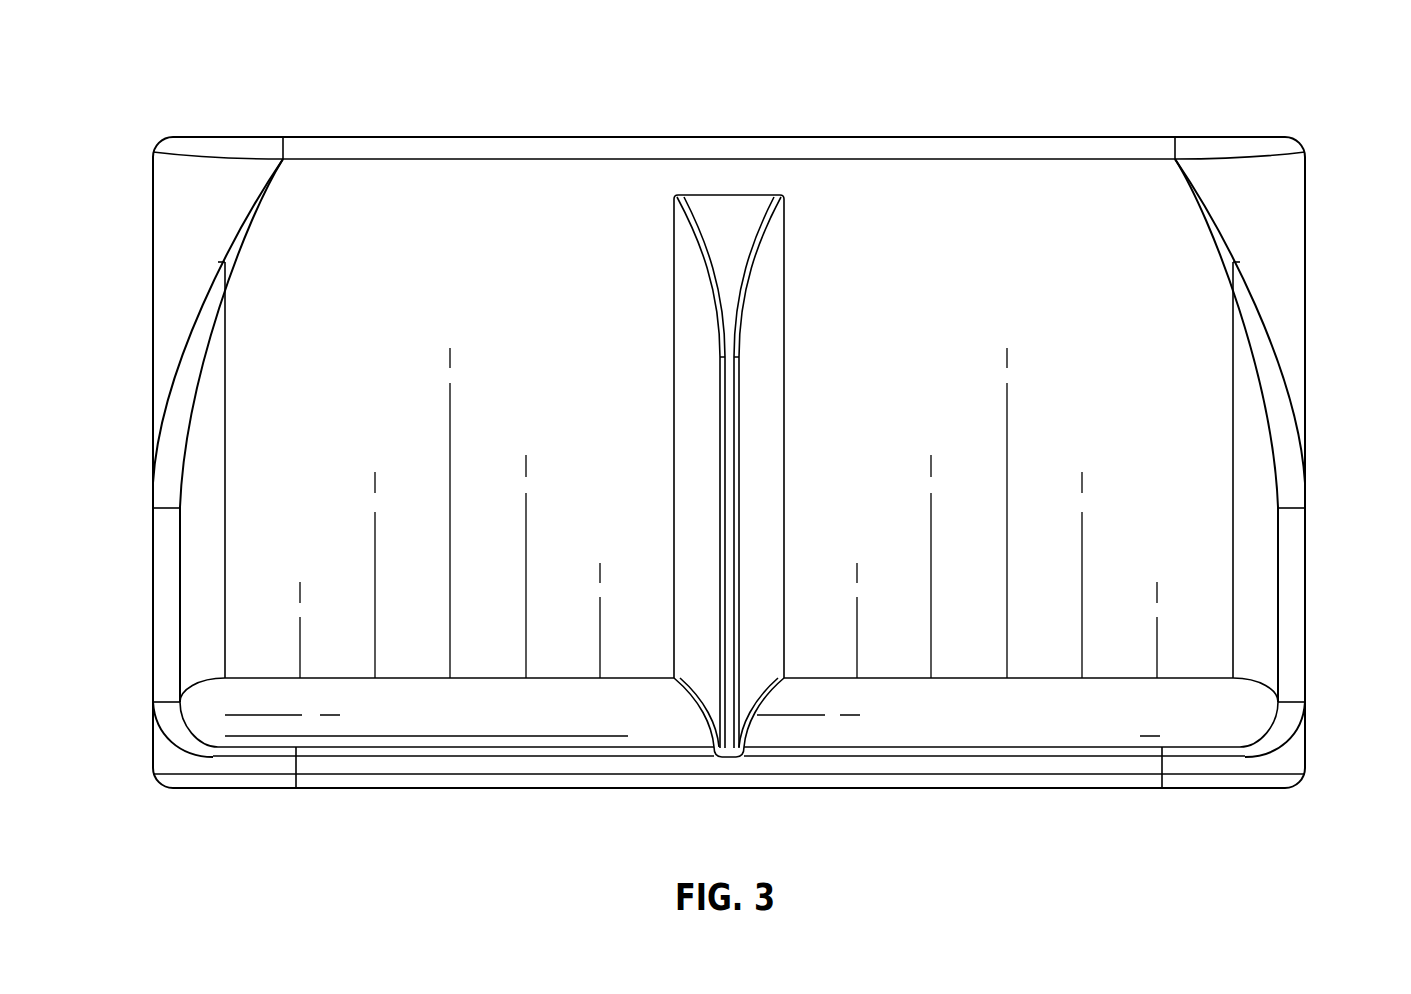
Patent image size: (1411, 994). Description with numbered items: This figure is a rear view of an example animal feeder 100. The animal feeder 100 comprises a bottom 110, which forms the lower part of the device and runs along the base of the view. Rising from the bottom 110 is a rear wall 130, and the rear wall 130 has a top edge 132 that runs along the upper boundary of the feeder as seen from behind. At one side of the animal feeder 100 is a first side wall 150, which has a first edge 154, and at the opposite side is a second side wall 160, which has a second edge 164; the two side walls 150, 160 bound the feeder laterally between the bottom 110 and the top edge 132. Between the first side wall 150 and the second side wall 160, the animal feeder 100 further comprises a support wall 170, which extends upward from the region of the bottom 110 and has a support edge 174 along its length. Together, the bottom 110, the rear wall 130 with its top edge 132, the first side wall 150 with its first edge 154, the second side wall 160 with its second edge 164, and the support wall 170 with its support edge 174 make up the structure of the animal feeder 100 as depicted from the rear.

The animal feeder 100 is at (275, 68).
The bottom 110 is at (459, 768).
The rear wall 130 is at (1197, 542).
The top edge 132 is at (1043, 137).
The first side wall 150 is at (180, 220).
The first edge 154 is at (167, 490).
The second side wall 160 is at (1272, 182).
The second edge 164 is at (1290, 482).
The support wall 170 is at (760, 378).
The support edge 174 is at (727, 547).